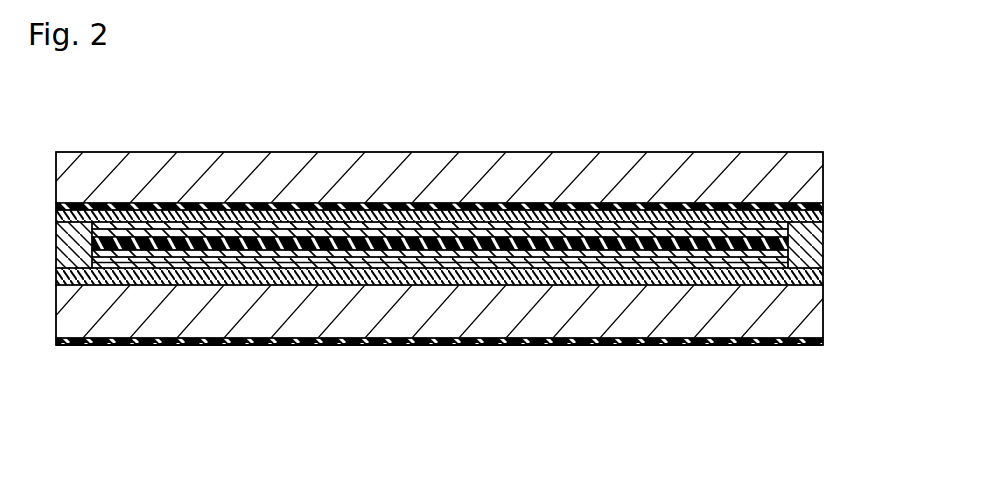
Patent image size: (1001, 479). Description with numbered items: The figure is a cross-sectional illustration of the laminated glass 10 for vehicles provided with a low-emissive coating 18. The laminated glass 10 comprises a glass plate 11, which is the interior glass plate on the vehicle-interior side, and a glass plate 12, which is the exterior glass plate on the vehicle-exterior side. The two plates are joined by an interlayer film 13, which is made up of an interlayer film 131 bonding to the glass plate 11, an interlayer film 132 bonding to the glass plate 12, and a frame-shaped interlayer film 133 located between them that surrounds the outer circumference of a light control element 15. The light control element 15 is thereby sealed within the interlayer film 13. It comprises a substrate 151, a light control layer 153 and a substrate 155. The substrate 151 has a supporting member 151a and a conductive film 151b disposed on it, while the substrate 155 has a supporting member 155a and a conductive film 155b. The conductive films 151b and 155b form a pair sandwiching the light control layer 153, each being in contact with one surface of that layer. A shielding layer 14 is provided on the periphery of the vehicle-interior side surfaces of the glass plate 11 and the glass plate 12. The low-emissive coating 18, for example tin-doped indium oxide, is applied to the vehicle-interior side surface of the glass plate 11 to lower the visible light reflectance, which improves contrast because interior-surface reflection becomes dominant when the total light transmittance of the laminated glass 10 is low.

The laminated glass 10 is at (80, 130).
The glass plate 11 is at (812, 312).
The glass plate 12 is at (810, 163).
The interlayer film 13 is at (493, 342).
The interlayer film 131 is at (812, 277).
The interlayer film 132 is at (810, 215).
The frame-shaped interlayer film 133 is at (473, 350).
The shielding layer 14 is at (810, 208).
The light control element 15 is at (440, 350).
The substrate 151 is at (440, 344).
The supporting member 151a is at (220, 263).
The conductive film 151b is at (278, 252).
The light control layer 153 is at (335, 247).
The substrate 155 is at (440, 330).
The supporting member 155a is at (452, 225).
The conductive film 155b is at (392, 232).
The low-emissive coating 18 is at (715, 345).